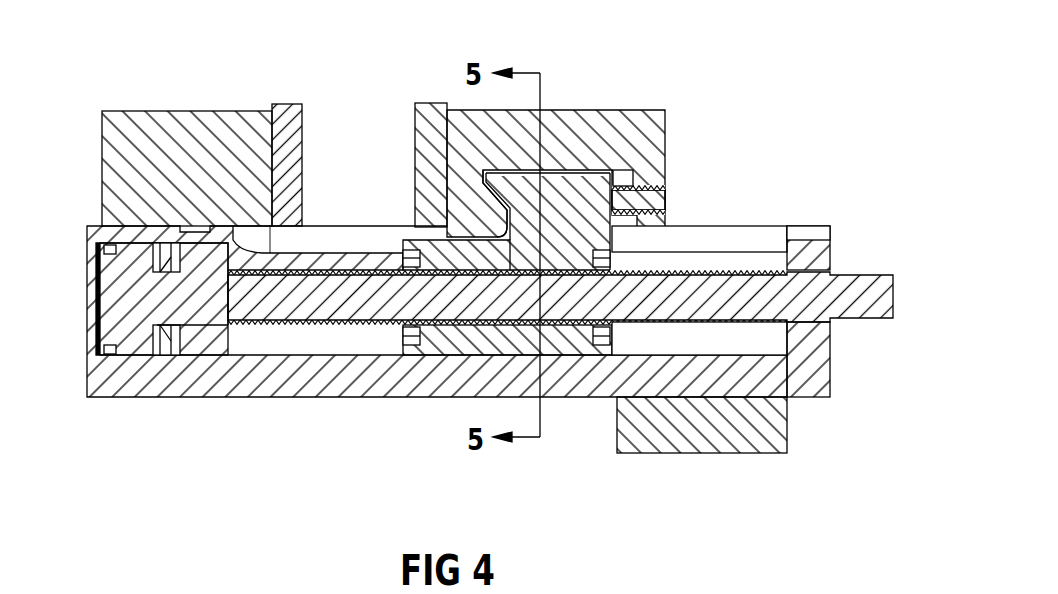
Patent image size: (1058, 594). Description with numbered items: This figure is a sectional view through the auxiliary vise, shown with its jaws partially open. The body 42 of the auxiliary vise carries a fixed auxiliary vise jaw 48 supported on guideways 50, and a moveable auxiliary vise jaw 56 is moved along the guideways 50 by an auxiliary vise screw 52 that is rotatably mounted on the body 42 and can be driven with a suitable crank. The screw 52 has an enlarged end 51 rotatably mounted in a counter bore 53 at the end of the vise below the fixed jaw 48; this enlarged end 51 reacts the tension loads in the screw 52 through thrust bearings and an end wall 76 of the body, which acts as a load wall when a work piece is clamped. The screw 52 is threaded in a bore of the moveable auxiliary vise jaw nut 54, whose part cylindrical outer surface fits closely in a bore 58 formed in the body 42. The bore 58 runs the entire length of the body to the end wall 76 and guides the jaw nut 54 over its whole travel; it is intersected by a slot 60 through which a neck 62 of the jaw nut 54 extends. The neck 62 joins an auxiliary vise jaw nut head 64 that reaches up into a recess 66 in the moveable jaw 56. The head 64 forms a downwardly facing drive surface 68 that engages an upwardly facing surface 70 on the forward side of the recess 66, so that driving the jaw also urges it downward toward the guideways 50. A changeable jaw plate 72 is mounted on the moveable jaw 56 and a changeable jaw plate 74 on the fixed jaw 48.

The body 42 is at (212, 393).
The fixed auxiliary vise jaw 48 is at (143, 130).
The guideways 50 is at (363, 227).
The enlarged end 51 is at (136, 340).
The auxiliary vise screw 52 is at (328, 300).
The counter bore 53 is at (97, 245).
The moveable auxiliary vise jaw nut 54 is at (450, 340).
The moveable auxiliary vise jaw 56 is at (560, 128).
The bore 58 is at (376, 345).
The slot 60 is at (313, 230).
The neck 62 is at (625, 205).
The auxiliary vise jaw nut head 64 is at (568, 187).
The recess 66 is at (622, 178).
The downwardly facing drive surface 68 is at (490, 200).
The upwardly facing surface 70 is at (490, 197).
The changeable jaw plate 72 is at (423, 103).
The changeable jaw plate 74 is at (288, 105).
The end wall 76 is at (232, 338).